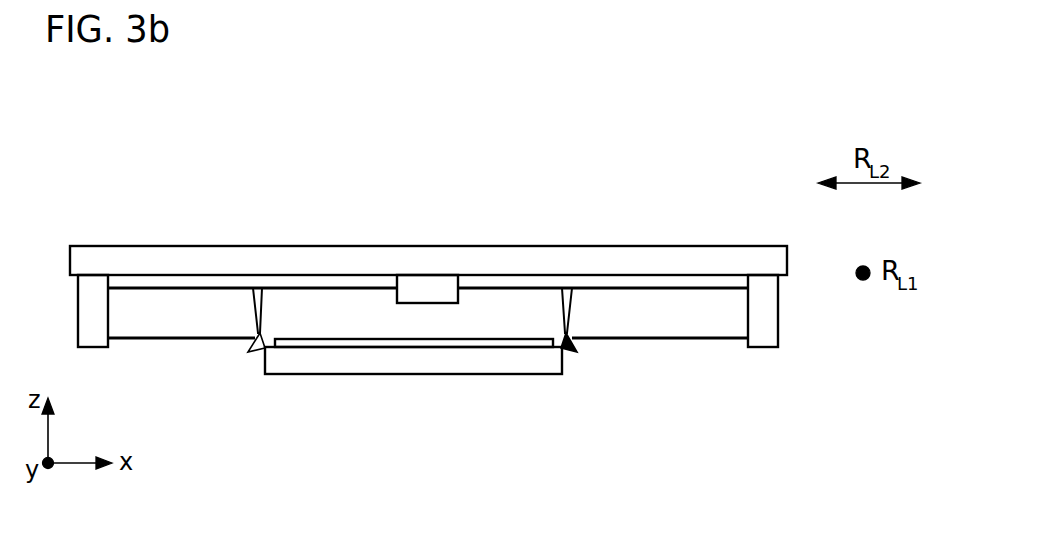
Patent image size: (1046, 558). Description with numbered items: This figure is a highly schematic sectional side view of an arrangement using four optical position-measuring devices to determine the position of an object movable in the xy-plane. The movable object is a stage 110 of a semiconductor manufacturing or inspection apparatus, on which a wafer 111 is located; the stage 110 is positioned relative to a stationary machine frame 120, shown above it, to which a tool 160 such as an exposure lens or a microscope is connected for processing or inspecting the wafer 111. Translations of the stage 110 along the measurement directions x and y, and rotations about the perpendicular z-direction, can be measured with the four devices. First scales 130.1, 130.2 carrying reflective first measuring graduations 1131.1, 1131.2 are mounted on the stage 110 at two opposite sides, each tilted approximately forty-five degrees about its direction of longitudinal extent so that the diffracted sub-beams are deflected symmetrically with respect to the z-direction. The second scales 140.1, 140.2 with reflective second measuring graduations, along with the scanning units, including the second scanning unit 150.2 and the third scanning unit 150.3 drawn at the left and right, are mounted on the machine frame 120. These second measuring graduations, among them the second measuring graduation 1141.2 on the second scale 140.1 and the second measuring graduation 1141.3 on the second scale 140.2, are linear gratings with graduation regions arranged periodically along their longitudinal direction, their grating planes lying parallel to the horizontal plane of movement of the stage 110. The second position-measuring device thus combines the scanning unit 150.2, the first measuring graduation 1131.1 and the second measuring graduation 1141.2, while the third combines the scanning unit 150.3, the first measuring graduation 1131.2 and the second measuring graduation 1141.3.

The stage 110 is at (452, 360).
The wafer 111 is at (356, 345).
The machine frame 120 is at (716, 260).
The first scale 130.1 is at (257, 355).
The first scale 130.2 is at (567, 355).
The second scale 140.1 is at (205, 283).
The second scale 140.2 is at (620, 283).
The second scanning unit 150.2 is at (92, 300).
The third scanning unit 150.3 is at (762, 311).
The tool 160 is at (431, 290).
The first measuring graduation 1131.1 is at (251, 356).
The first measuring graduation 1131.2 is at (578, 356).
The second measuring graduation 1141.2 is at (163, 292).
The second measuring graduation 1141.3 is at (662, 292).